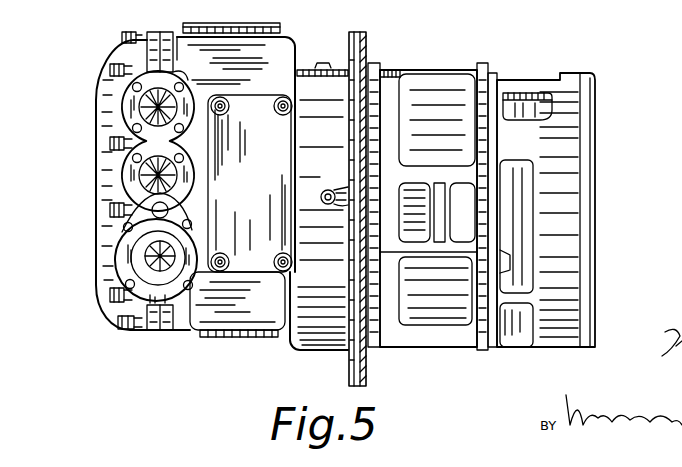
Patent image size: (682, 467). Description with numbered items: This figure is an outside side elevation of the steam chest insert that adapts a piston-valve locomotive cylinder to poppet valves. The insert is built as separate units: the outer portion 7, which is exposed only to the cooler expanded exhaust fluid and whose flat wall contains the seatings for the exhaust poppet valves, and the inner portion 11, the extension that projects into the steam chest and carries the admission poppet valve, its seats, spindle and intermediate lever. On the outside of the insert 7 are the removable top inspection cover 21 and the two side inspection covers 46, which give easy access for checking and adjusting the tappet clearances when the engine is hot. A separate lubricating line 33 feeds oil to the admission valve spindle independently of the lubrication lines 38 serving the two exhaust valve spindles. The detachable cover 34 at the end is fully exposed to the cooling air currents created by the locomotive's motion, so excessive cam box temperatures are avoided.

The steam chest insert outer portion 7 is at (284, 349).
The steam chest insert inner portion 11 is at (598, 78).
The top inspection cover 21 is at (250, 23).
The lubricating line 33 is at (337, 62).
The detachable cover 34 is at (100, 160).
The lubrication lines 38 is at (322, 165).
The side inspection covers 46 is at (236, 187).